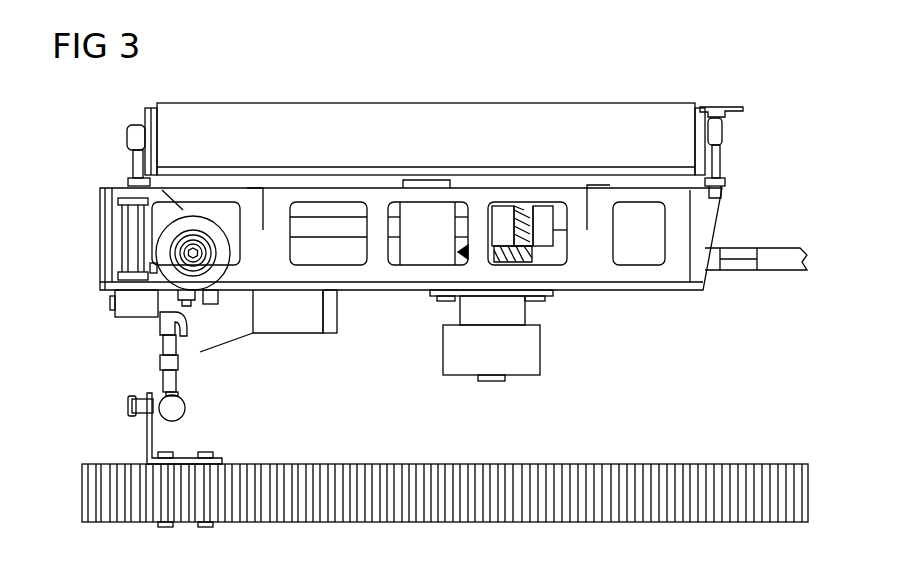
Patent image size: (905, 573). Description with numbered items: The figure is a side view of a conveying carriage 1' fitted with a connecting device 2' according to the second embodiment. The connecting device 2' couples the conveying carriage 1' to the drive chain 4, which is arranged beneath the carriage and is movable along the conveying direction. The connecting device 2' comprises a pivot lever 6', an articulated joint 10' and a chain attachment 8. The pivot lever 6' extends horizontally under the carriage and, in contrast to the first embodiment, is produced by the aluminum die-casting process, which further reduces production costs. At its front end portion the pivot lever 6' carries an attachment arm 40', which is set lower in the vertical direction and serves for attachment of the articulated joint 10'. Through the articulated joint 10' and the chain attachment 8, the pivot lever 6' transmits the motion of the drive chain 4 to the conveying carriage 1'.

The conveying carriage 1' is at (453, 205).
The connecting device 2' is at (174, 419).
The attachment arm 40' is at (228, 352).
The articulated joint 10' is at (189, 395).
The pivot lever 6' is at (268, 341).
The chain attachment 8 is at (147, 445).
The drive chain 4 is at (613, 478).